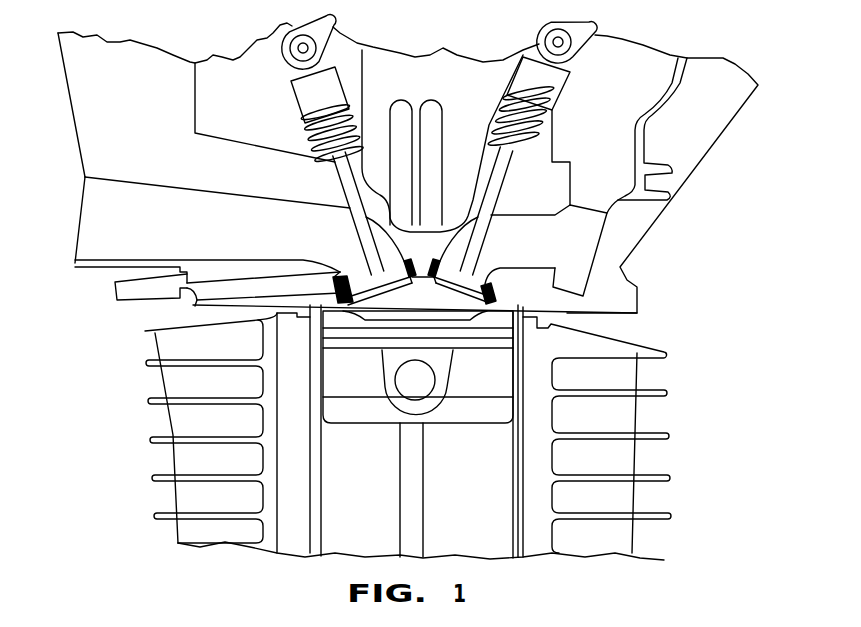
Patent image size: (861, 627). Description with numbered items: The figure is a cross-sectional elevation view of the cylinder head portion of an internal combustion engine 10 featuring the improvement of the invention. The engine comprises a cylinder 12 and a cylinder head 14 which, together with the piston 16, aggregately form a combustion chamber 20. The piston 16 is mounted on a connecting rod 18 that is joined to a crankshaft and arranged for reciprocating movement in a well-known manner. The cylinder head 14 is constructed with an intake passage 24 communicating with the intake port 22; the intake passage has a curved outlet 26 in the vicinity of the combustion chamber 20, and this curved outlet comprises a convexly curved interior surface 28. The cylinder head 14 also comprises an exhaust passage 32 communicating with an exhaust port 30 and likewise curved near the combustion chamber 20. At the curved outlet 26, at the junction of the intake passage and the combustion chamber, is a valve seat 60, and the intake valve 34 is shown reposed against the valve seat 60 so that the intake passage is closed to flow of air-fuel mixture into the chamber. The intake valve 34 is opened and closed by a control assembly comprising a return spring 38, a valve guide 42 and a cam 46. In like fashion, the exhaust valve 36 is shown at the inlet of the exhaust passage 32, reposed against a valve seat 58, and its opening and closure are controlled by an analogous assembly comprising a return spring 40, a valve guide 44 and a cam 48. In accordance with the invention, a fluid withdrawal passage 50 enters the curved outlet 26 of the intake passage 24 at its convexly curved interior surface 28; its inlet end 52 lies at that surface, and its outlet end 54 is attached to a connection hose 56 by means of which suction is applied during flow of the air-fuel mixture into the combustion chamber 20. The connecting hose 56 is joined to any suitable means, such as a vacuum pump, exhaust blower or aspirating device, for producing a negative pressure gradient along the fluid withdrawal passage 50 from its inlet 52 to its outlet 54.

The internal combustion engine 10 is at (138, 432).
The cylinder 12 is at (548, 553).
The cylinder head 14 is at (80, 93).
The piston 16 is at (443, 421).
The connecting rod 18 is at (407, 508).
The combustion chamber 20 is at (408, 304).
The intake port 22 is at (90, 225).
The intake passage 24 is at (188, 203).
The curved outlet 26 is at (388, 244).
The convexly curved interior surface 28 is at (338, 268).
The exhaust port 30 is at (584, 238).
The exhaust passage 32 is at (521, 252).
The intake valve 34 is at (364, 230).
The exhaust valve 36 is at (486, 234).
The return spring 38 is at (310, 133).
The return spring 40 is at (543, 135).
The valve guide 42 is at (302, 93).
The valve guide 44 is at (555, 92).
The cam 46 is at (321, 24).
The cam 48 is at (587, 30).
The fluid withdrawal passage 50 is at (267, 279).
The inlet end 52 is at (345, 276).
The outlet end 54 is at (192, 295).
The connection hose 56 is at (122, 297).
The valve seat 58 is at (490, 294).
The valve seat 60 is at (340, 297).